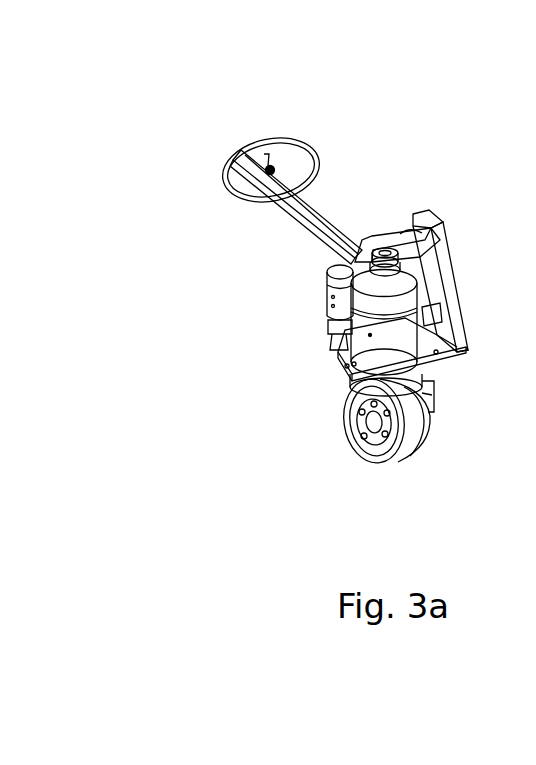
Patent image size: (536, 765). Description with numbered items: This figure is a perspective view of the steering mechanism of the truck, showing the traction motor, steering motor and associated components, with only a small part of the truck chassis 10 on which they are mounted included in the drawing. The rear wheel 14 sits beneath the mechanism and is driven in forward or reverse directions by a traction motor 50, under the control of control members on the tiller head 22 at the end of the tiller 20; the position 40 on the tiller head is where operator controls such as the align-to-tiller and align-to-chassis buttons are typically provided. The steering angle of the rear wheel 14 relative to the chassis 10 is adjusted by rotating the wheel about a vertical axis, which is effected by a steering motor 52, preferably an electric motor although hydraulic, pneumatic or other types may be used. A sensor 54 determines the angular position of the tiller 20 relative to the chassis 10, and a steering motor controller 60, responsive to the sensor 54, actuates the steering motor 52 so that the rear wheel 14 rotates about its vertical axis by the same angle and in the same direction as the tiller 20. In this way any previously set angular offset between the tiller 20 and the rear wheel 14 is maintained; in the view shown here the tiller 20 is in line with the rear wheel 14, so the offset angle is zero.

The truck chassis 10 is at (447, 267).
The rear wheel 14 is at (413, 433).
The tiller 20 is at (300, 213).
The tiller head 22 is at (224, 176).
The position of operator controls 40 is at (266, 152).
The traction motor 50 is at (370, 335).
The steering motor 52 is at (335, 290).
The sensor 54 is at (375, 240).
The steering motor controller 60 is at (420, 222).